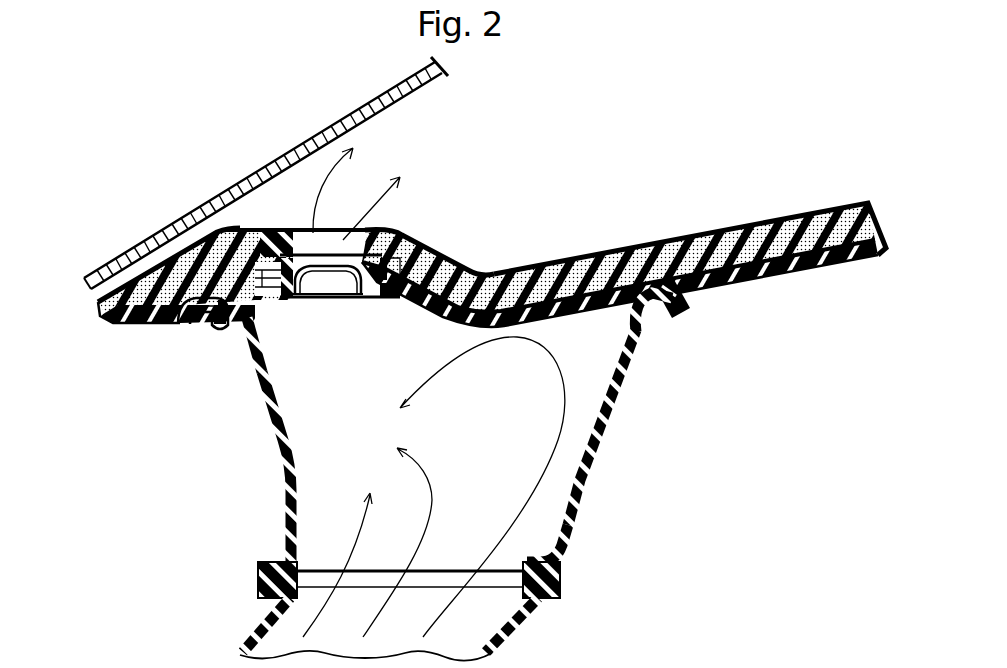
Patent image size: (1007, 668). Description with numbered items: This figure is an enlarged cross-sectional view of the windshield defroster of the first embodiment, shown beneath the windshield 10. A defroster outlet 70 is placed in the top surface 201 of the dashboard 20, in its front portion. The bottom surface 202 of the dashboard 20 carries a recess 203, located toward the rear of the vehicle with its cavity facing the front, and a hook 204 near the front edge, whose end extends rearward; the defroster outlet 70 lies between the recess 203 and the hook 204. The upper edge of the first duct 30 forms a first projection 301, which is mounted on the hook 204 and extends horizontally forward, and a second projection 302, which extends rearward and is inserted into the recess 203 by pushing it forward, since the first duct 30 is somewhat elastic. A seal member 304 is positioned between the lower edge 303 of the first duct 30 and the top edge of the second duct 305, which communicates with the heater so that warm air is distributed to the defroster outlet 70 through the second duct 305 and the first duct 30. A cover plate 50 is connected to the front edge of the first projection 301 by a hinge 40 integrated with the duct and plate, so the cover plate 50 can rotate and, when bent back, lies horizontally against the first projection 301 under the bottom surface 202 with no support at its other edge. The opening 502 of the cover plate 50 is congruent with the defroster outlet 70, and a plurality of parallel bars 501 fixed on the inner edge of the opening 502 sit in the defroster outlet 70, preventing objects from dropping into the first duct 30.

The lid 10 is at (337, 121).
The dashboard 20 is at (508, 262).
The top surface 201 is at (423, 233).
The bottom surface 202 is at (693, 303).
The recess 203 is at (678, 240).
The hook 204 is at (203, 318).
The first duct 30 is at (603, 423).
The first projection 301 is at (237, 333).
The second projection 302 is at (641, 268).
The lower edge 303 is at (537, 560).
The seal member 304 is at (557, 581).
The second duct 305 is at (513, 620).
The hinge 40 is at (213, 322).
The cover plate 50 is at (381, 300).
The bar 501 is at (331, 270).
The opening 502 is at (308, 297).
The defroster outlet 70 is at (297, 255).